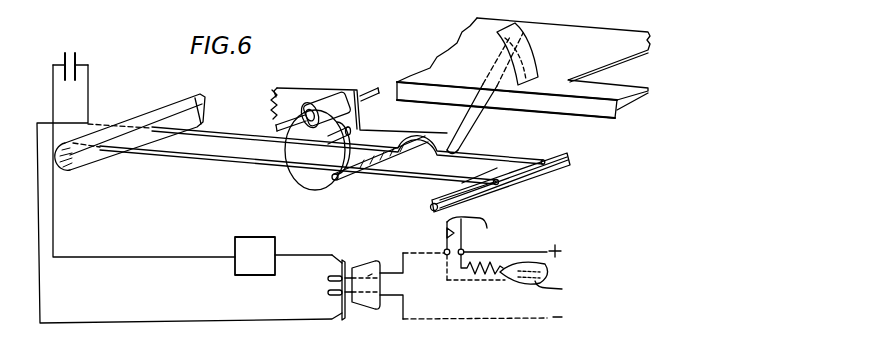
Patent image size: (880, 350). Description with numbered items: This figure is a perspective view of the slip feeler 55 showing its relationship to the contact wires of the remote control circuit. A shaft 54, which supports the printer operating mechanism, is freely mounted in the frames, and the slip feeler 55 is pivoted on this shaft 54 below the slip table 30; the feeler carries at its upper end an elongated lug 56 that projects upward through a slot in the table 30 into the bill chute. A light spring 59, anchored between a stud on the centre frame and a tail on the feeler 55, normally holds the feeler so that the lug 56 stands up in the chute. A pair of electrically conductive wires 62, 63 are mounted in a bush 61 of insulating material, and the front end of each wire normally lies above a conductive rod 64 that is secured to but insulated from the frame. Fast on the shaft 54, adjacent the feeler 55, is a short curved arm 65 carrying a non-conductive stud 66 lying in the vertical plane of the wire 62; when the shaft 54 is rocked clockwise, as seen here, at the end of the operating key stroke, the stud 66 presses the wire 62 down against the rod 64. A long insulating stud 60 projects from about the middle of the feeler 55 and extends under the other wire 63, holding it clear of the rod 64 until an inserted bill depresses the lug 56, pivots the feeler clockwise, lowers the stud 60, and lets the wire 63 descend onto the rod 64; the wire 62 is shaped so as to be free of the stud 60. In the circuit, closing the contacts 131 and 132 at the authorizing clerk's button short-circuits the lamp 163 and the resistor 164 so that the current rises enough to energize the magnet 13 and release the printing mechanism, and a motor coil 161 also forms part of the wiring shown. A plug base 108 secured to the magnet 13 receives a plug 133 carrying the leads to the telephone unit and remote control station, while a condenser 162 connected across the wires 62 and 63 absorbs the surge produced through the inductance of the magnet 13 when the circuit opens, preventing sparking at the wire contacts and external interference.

The magnet 13 is at (258, 253).
The slip table 30 is at (598, 55).
The shaft 54 is at (380, 90).
The slip feeler 55 is at (452, 131).
The elongated lug 56 is at (530, 63).
The light spring 59 is at (269, 108).
The long stud 60 is at (390, 153).
The bush 61 is at (177, 110).
The wire 62 is at (517, 157).
The wire 63 is at (488, 192).
The rod 64 is at (533, 173).
The short curved arm 65 is at (302, 151).
The stud 66 is at (301, 163).
The plug base 108 is at (343, 262).
The contact 131 is at (446, 233).
The contact 132 is at (482, 236).
The plug 133 is at (368, 276).
The motor coil 161 is at (322, 98).
The condenser 162 is at (82, 50).
The lamp 163 is at (564, 291).
The resistor 164 is at (545, 264).